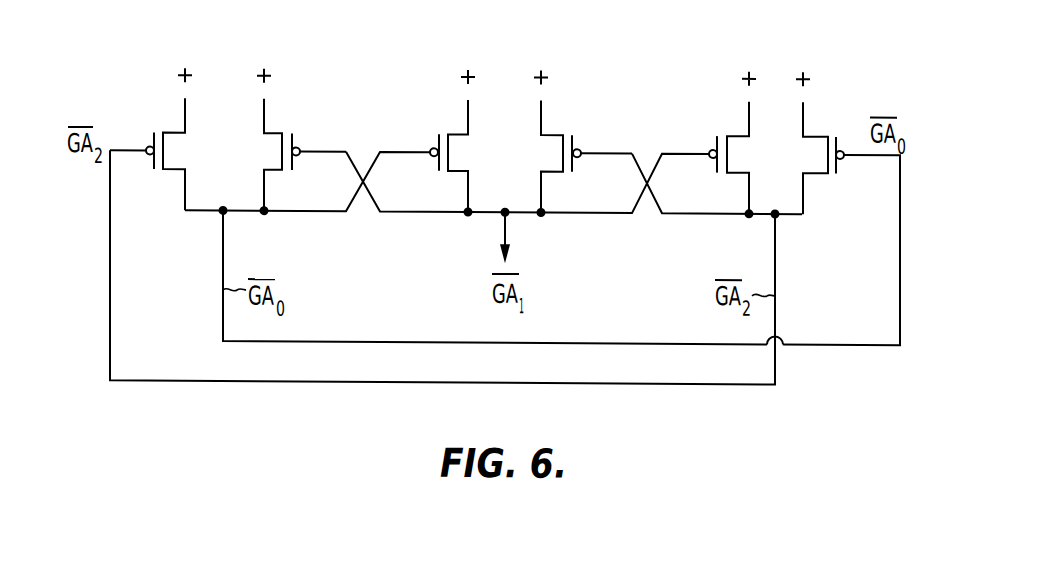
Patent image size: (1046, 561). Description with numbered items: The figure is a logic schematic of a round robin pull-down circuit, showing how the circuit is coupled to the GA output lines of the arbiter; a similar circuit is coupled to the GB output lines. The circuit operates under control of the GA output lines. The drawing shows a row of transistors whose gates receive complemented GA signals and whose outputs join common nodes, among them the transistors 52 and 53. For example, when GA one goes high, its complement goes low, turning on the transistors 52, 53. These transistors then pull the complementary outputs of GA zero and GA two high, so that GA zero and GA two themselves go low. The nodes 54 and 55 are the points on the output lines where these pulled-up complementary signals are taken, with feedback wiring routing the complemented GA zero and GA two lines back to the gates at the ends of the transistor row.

The transistor 52 is at (716, 143).
The transistor 53 is at (292, 132).
The GA0 output node 54 is at (226, 212).
The GA2 output node 55 is at (777, 212).